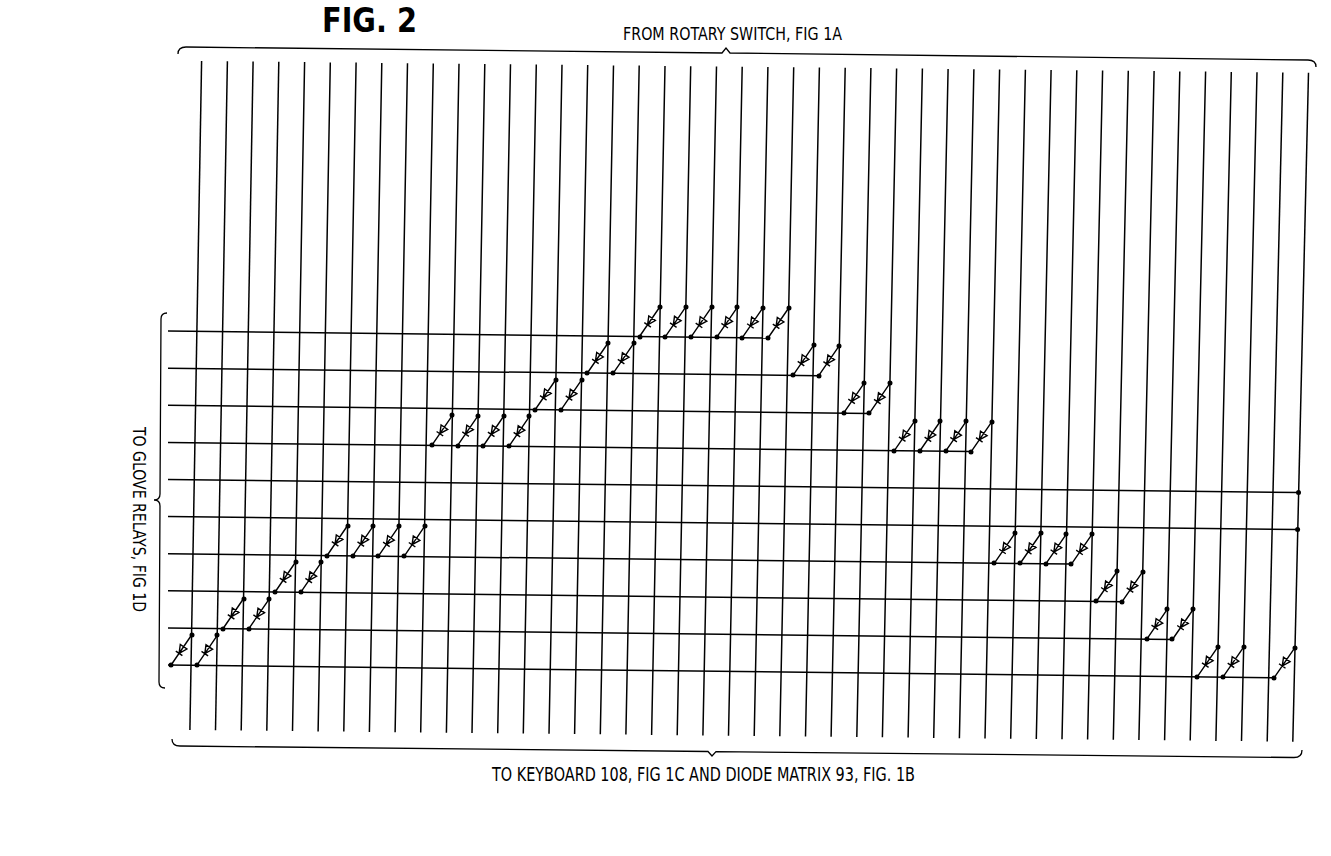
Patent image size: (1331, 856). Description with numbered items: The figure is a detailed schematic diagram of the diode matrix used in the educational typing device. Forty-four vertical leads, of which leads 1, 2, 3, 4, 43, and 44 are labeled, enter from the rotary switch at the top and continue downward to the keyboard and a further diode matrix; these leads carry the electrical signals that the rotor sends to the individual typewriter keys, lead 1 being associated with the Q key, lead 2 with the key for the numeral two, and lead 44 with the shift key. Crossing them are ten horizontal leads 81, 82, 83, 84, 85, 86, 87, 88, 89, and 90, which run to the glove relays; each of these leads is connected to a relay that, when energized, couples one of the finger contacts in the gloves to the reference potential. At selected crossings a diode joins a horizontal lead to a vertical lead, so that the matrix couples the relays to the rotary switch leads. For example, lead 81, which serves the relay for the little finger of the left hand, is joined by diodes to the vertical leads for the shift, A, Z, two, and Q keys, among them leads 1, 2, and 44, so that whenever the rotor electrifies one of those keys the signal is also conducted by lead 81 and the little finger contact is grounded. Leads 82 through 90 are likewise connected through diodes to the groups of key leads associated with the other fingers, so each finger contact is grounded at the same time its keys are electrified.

The lead 1 is at (201, 97).
The lead 2 is at (226, 97).
The lead 3 is at (252, 97).
The lead 4 is at (278, 97).
The lead 43 is at (1282, 113).
The lead 44 is at (1307, 113).
The lead 81 is at (194, 669).
The lead 82 is at (193, 628).
The lead 83 is at (193, 591).
The lead 84 is at (193, 554).
The lead 85 is at (193, 517).
The lead 86 is at (193, 480).
The lead 87 is at (193, 443).
The lead 88 is at (193, 406).
The lead 89 is at (193, 369).
The lead 90 is at (193, 332).